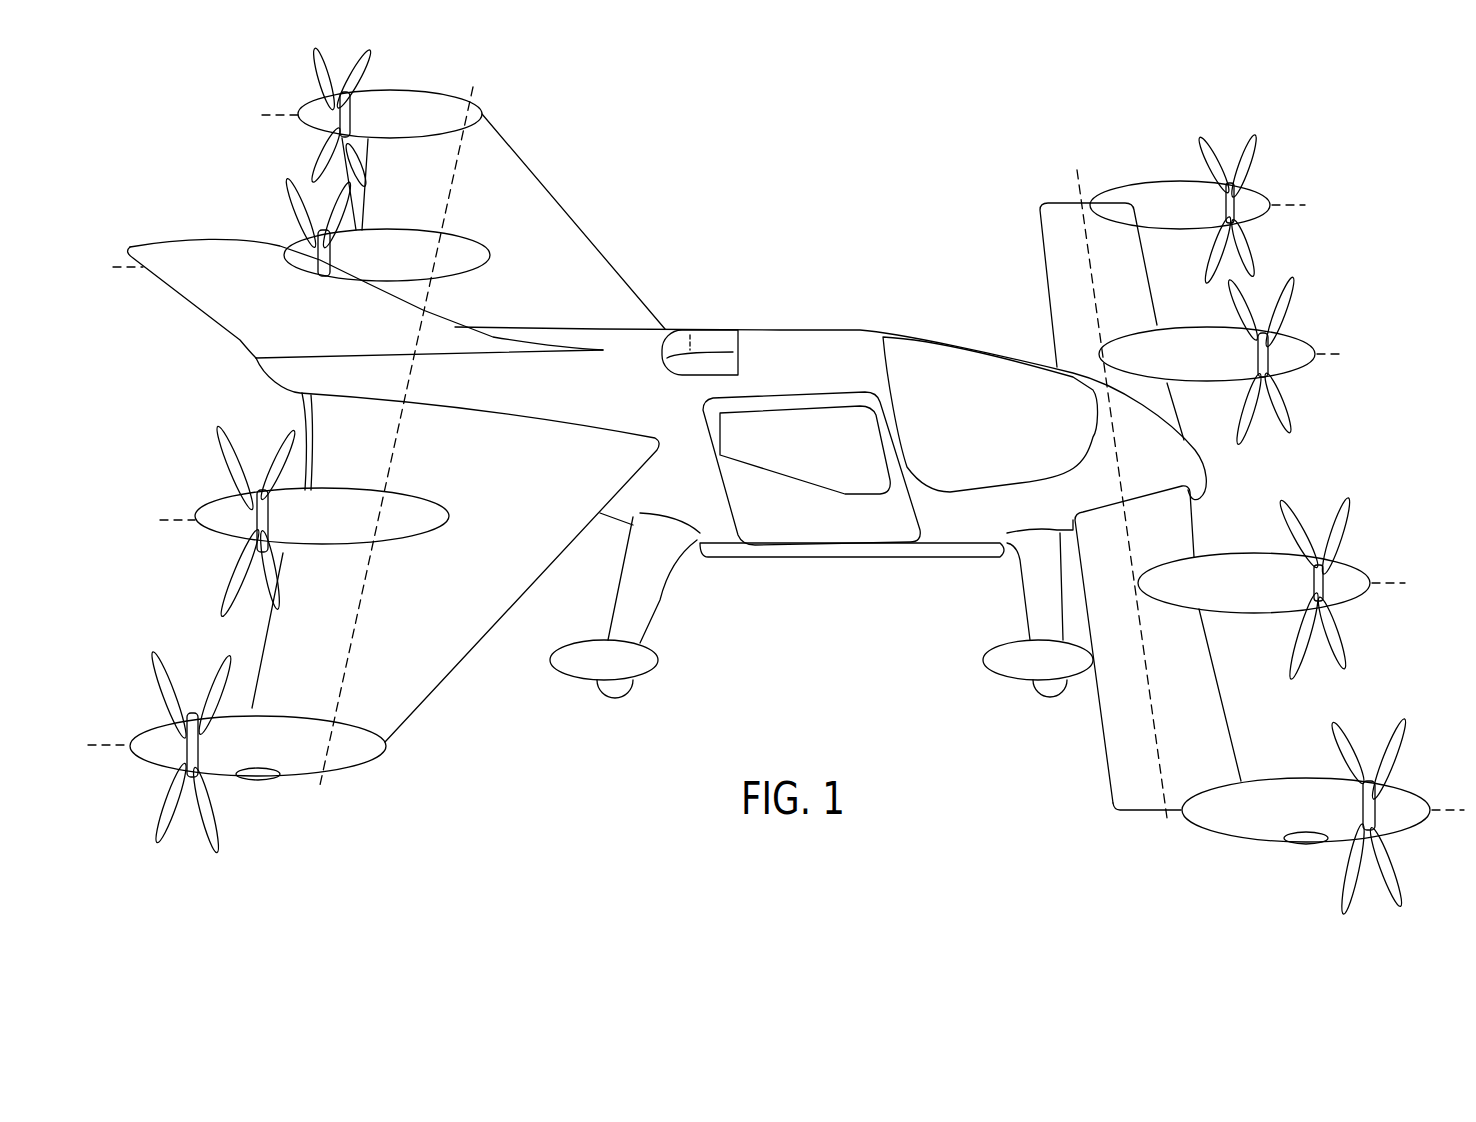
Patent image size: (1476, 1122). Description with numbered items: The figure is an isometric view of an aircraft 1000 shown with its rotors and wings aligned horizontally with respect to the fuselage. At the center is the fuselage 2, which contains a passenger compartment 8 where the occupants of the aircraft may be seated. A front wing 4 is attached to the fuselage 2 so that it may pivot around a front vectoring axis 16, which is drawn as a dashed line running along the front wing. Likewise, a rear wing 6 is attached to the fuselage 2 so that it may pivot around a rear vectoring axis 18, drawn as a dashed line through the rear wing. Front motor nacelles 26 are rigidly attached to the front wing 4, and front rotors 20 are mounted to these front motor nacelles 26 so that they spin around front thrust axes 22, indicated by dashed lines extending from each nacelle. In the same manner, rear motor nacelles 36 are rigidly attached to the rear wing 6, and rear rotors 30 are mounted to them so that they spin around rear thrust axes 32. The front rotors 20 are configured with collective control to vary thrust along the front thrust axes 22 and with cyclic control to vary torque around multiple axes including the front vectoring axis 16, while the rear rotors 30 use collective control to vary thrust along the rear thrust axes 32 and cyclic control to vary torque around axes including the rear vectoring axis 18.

The aircraft 1000 is at (1188, 110).
The fuselage 2 is at (800, 348).
The front wing 4 is at (1060, 288).
The rear wing 6 is at (537, 203).
The passenger compartment 8 is at (842, 533).
The front vectoring axis 16 is at (1173, 831).
The rear vectoring axis 18 is at (350, 655).
The front rotors 20 is at (1253, 160).
The front thrust axes 22 is at (1300, 210).
The front motor nacelles 26 is at (1166, 221).
The rear rotors 30 is at (317, 72).
The rear thrust axes 32 is at (293, 118).
The rear motor nacelles 36 is at (413, 100).